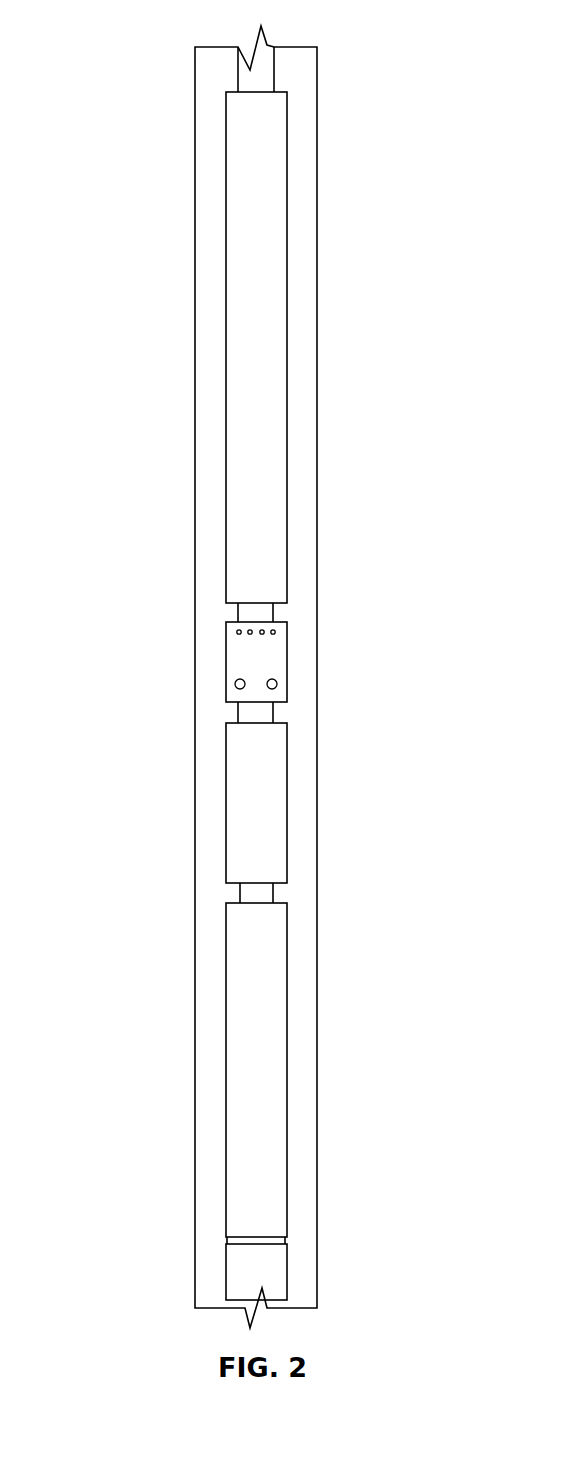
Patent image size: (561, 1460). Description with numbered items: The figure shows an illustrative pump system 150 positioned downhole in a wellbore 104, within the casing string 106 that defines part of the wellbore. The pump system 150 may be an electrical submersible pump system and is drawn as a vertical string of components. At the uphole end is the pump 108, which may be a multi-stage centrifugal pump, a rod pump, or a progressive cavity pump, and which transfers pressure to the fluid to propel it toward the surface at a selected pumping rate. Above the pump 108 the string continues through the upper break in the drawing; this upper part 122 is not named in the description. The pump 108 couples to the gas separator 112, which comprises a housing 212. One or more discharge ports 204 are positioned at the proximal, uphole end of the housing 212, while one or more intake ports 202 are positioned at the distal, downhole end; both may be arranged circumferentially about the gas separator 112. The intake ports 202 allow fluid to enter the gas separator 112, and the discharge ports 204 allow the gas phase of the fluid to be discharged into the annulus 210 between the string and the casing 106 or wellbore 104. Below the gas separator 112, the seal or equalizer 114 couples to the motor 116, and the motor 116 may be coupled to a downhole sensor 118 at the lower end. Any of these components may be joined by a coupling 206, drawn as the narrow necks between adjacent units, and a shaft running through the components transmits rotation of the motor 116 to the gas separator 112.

The pump system 150 is at (140, 41).
The wellbore 104 is at (316, 258).
The casing string 106 is at (317, 317).
The conduit 122 is at (274, 80).
The annulus 210 is at (298, 120).
The pump 108 is at (273, 172).
The coupling 206 is at (262, 712).
The housing 212 is at (290, 668).
The gas separator 112 is at (262, 638).
The discharge ports 204 is at (237, 631).
The intake ports 202 is at (236, 682).
The seal or equalizer 114 is at (277, 783).
The motor 116 is at (275, 1015).
The sensor 118 is at (277, 1262).